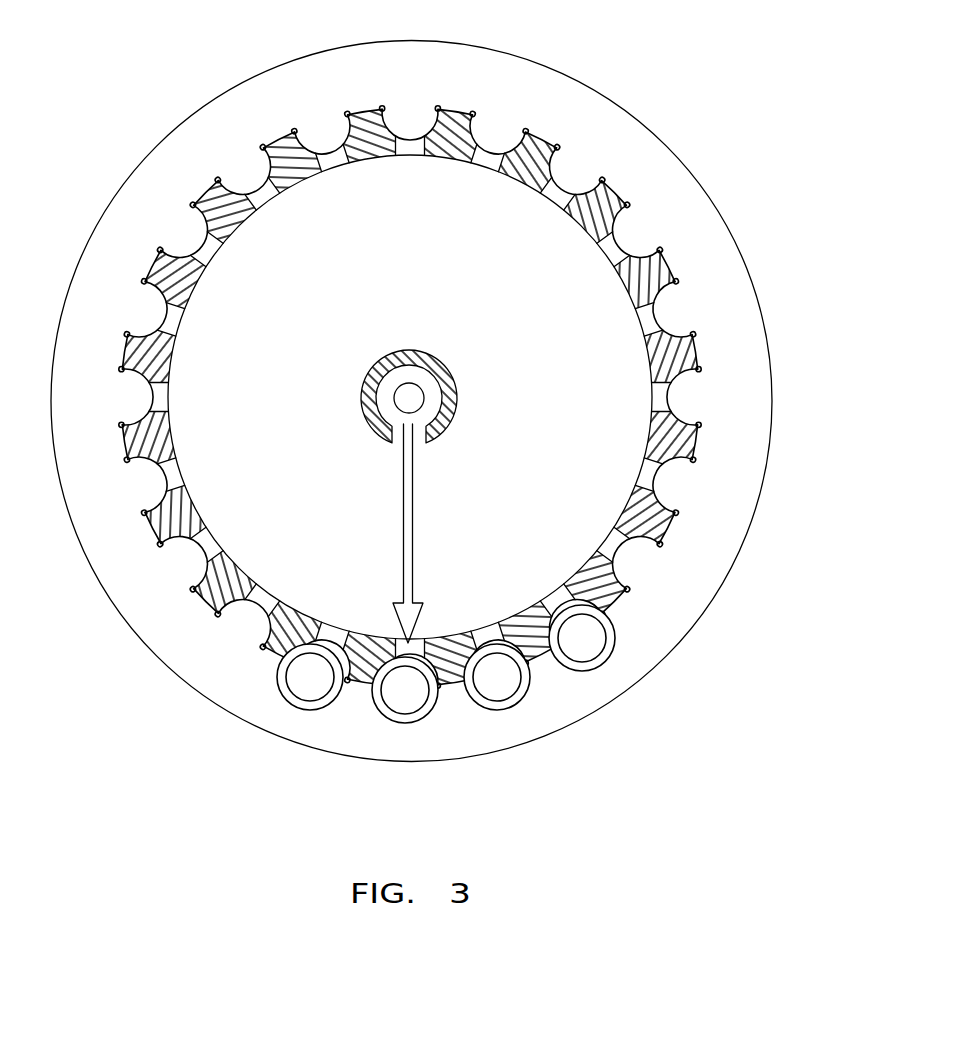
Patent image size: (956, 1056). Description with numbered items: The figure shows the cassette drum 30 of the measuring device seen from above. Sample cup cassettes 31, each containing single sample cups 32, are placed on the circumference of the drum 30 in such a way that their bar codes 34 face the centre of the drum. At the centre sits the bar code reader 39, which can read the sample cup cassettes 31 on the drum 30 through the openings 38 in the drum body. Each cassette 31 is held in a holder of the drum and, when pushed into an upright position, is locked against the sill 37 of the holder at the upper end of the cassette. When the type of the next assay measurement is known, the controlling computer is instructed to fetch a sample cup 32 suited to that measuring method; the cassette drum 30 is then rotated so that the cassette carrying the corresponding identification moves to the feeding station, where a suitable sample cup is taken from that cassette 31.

The cassette drum 30 is at (703, 130).
The sample cup cassette 31 is at (383, 713).
The sample cup 32 is at (416, 704).
The bar code 34 is at (323, 643).
The sill 37 is at (660, 552).
The opening 38 is at (430, 637).
The bar code reader 39 is at (409, 392).